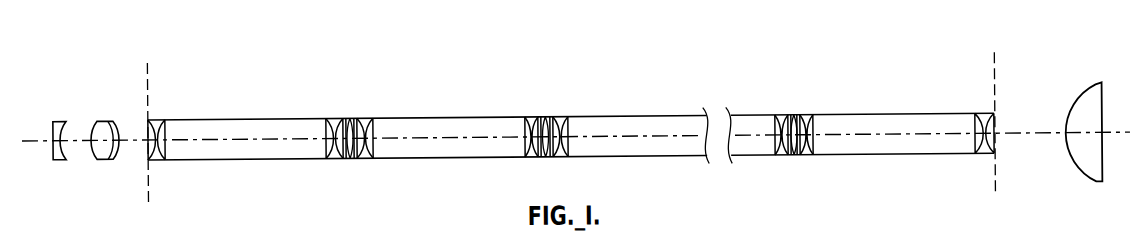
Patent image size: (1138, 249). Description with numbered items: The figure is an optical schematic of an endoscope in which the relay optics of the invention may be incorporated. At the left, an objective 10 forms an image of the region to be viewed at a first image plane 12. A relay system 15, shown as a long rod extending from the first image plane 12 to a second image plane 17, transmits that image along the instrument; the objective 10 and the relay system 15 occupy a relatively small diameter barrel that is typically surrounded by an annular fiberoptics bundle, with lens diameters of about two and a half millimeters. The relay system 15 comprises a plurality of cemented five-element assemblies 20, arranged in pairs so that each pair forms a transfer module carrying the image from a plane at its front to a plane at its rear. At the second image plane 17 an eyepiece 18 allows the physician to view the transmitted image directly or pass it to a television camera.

The objective 10 is at (118, 77).
The first image plane 12 is at (148, 178).
The relay system 15 is at (989, 77).
The second image plane 17 is at (996, 194).
The eyepiece 18 is at (1106, 76).
The cemented five-element assembly 20 is at (235, 121).